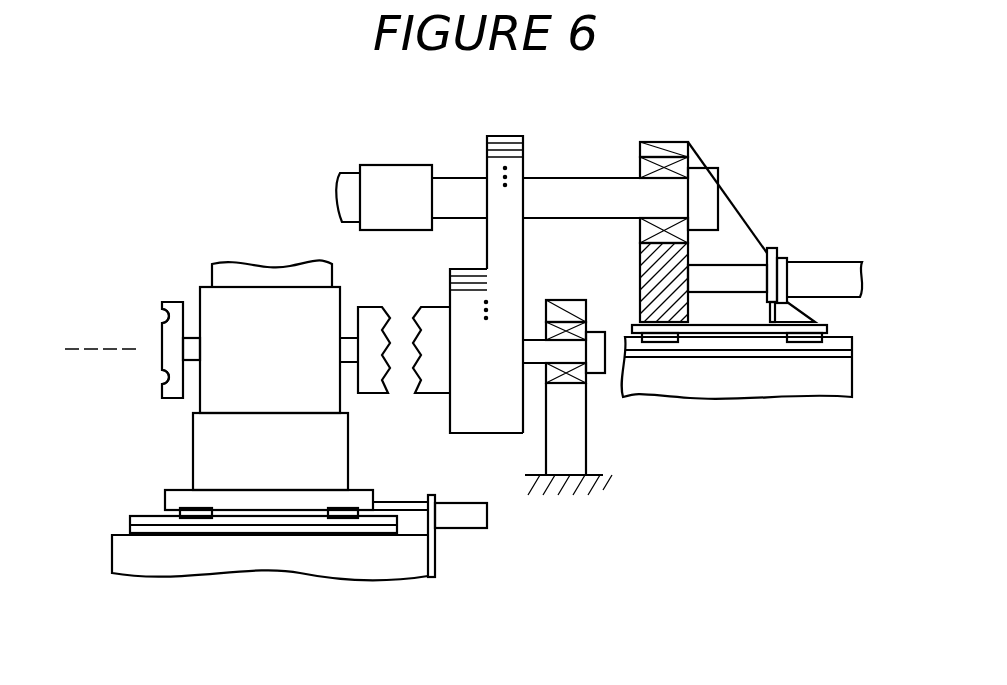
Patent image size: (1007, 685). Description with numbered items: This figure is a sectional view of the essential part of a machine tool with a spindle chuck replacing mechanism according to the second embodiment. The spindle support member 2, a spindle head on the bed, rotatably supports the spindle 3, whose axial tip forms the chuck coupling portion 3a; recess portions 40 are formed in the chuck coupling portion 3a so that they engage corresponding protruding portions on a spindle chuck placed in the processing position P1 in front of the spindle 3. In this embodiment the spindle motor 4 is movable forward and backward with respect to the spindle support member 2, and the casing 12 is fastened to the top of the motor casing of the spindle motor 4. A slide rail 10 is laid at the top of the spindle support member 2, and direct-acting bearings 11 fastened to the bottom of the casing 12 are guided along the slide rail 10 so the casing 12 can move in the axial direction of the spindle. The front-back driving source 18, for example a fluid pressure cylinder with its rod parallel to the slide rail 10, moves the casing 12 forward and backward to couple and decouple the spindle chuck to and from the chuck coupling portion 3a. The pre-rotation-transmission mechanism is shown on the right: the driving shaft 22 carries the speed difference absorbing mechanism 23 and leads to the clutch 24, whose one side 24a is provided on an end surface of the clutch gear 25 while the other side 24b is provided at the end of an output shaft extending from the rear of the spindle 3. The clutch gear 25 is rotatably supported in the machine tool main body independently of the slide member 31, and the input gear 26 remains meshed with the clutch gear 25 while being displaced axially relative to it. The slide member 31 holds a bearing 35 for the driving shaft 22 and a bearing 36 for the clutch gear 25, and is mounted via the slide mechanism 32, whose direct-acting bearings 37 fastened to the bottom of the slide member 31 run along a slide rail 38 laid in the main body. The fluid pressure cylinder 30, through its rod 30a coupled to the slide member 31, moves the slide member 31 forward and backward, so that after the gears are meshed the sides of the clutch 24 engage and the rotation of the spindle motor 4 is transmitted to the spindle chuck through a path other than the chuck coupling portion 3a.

The processing position P1 is at (80, 348).
The spindle support member 2 is at (272, 562).
The spindle 3 is at (192, 366).
The chuck coupling portion 3a is at (175, 302).
The spindle motor 4 is at (276, 365).
The slide rail 10 is at (130, 518).
The direct-acting bearing 11 is at (197, 520).
The casing 12 is at (240, 268).
The front-back driving source 18 is at (460, 522).
The driving shaft 22 is at (345, 172).
The speed difference absorbing mechanism 23 is at (413, 212).
The clutch 24 is at (396, 364).
The one side of the clutch 24a is at (428, 307).
The other side of the clutch 24b is at (372, 307).
The clutch gear 25 is at (485, 435).
The input gear 26 is at (523, 150).
The fluid pressure cylinder 30 is at (830, 262).
The rod 30a is at (705, 292).
The slide member 31 is at (735, 235).
The slide mechanism 32 is at (778, 377).
The bearing 35 is at (667, 160).
The bearing 36 is at (568, 322).
The direct-acting bearing 37 is at (660, 343).
The slide rail 38 is at (755, 358).
The recess portion 40 is at (166, 312).